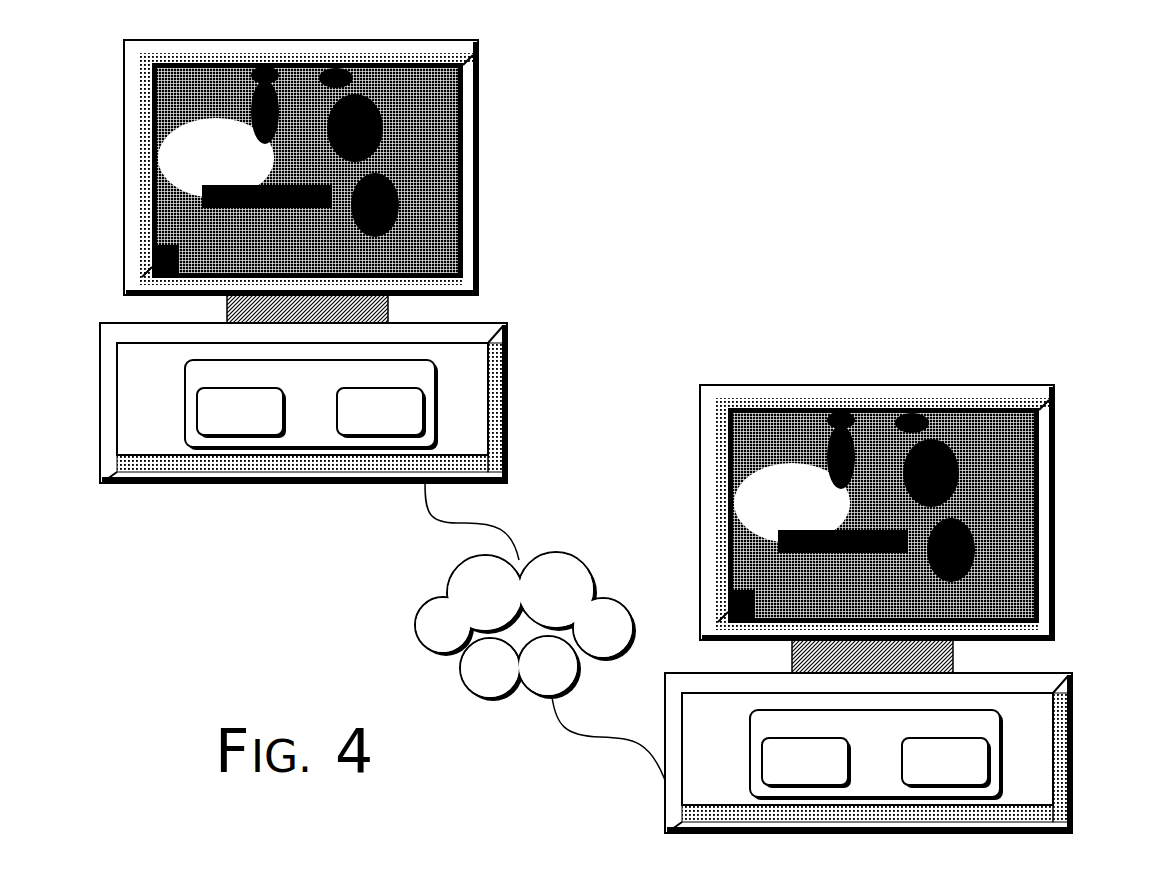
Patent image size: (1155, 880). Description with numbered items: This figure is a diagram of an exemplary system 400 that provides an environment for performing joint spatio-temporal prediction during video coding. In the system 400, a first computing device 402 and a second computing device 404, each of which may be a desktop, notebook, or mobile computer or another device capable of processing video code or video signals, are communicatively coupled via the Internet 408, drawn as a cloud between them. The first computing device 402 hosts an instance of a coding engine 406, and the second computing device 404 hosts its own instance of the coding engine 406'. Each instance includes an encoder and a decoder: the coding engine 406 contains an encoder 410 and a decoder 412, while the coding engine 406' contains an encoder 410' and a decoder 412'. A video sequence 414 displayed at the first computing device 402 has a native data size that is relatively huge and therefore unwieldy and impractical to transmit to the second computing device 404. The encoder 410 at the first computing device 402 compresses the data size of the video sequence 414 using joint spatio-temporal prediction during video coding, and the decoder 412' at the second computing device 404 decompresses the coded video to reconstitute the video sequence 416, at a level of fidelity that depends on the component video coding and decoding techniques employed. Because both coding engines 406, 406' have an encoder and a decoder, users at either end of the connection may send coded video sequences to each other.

The system 400 is at (891, 78).
The first computing device 402 is at (468, 323).
The second computing device 404 is at (1045, 672).
The coding engine 406 is at (311, 405).
The coding engine 406' is at (876, 755).
The Internet 408 is at (506, 635).
The encoder 410 is at (241, 413).
The encoder 410' is at (806, 763).
The decoder 412 is at (381, 413).
The decoder 412' is at (946, 763).
The video sequence 414 is at (431, 125).
The video sequence 416 is at (932, 516).